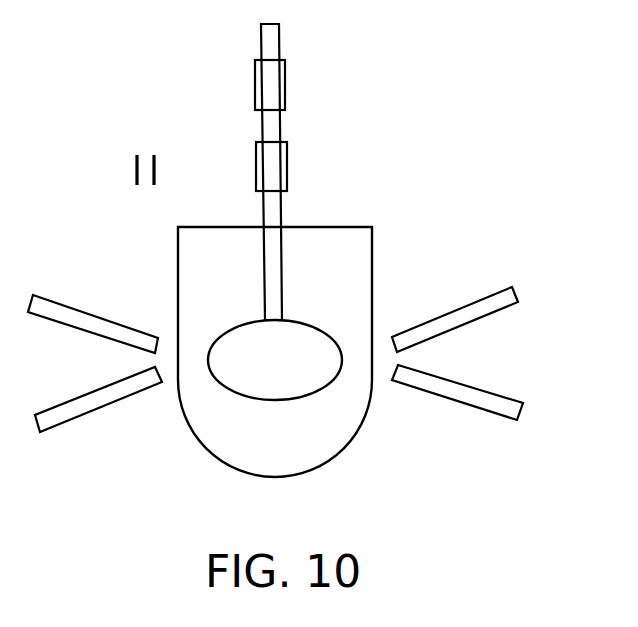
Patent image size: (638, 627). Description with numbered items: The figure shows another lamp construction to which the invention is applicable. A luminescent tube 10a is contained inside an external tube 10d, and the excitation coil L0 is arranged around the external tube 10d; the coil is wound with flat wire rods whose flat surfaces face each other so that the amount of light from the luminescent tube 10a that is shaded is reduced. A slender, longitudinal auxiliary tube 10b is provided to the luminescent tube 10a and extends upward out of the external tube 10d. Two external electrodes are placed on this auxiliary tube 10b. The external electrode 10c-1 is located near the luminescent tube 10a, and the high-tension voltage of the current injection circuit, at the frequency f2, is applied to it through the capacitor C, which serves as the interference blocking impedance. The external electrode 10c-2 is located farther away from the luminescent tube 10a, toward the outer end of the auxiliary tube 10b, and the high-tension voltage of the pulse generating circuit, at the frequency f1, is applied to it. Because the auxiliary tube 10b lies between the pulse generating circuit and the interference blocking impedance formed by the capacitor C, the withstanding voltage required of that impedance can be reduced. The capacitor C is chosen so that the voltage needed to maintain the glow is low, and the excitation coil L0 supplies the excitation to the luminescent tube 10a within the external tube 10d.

The luminescent tube 10a is at (330, 383).
The auxiliary tube 10b is at (283, 248).
The external electrode 10c-1 is at (287, 163).
The external electrode 10c-2 is at (286, 68).
The external tube 10d is at (372, 268).
The excitation coil L0 is at (502, 395).
The capacitor C is at (146, 187).
The frequency f1 is at (285, 79).
The frequency f2 is at (256, 170).